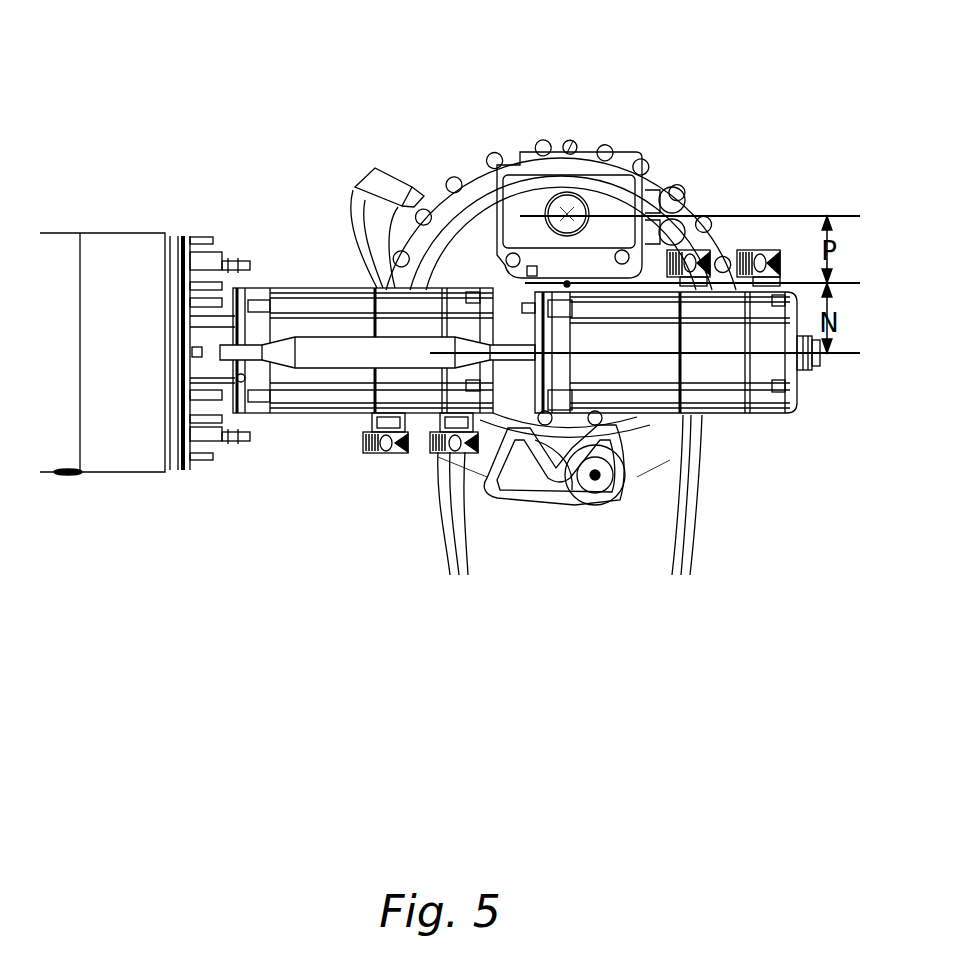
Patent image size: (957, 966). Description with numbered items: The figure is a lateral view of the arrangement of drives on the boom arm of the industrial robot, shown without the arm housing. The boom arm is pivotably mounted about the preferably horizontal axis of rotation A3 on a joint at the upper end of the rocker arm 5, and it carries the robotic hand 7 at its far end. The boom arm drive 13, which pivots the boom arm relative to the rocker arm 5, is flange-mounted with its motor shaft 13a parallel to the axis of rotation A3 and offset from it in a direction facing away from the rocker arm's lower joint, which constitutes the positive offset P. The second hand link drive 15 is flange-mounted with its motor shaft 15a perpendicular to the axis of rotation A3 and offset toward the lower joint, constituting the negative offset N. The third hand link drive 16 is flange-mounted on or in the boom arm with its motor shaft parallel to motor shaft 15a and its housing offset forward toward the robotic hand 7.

The robotic hand 7 is at (138, 245).
The third hand link drive 16 is at (317, 308).
The boom arm drive 13 is at (623, 197).
The motor shaft 13a is at (567, 213).
The axis of rotation A3 is at (567, 283).
The second hand link drive 15 is at (658, 372).
The motor shaft 15a is at (808, 368).
The rocker arm 5 is at (482, 521).